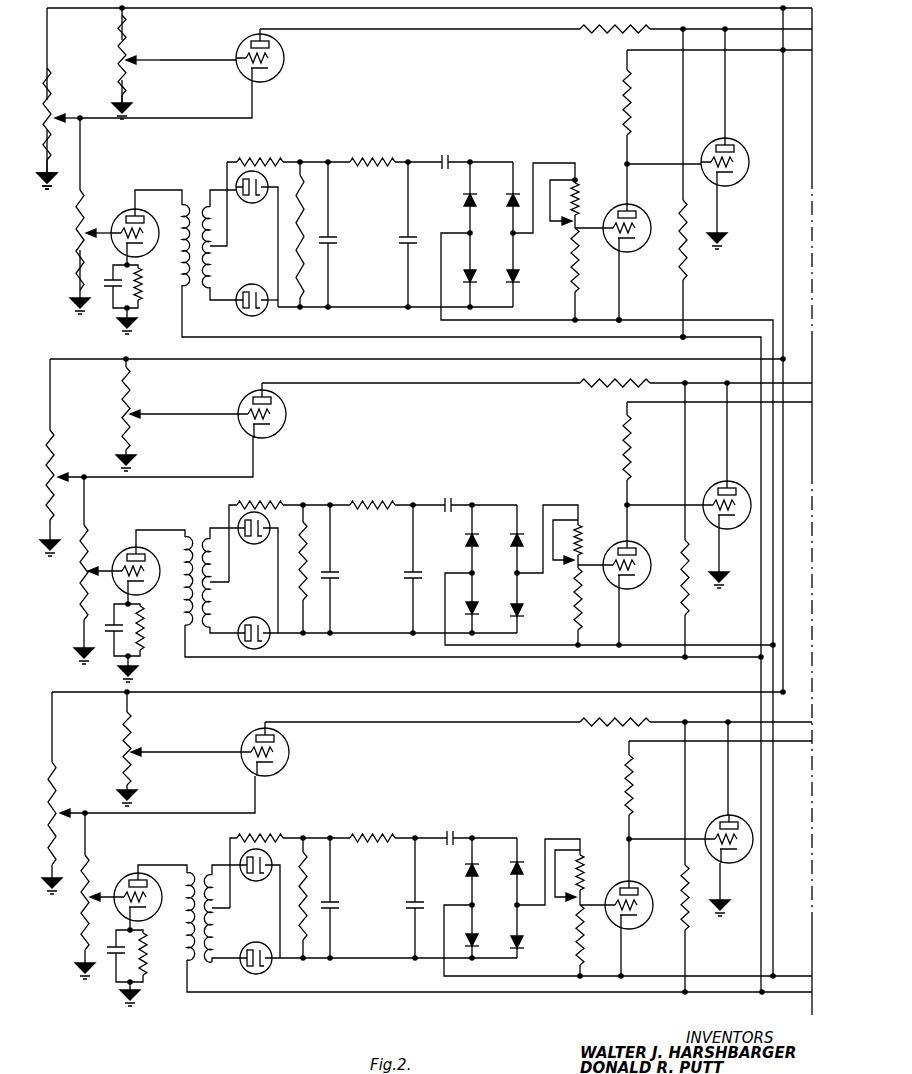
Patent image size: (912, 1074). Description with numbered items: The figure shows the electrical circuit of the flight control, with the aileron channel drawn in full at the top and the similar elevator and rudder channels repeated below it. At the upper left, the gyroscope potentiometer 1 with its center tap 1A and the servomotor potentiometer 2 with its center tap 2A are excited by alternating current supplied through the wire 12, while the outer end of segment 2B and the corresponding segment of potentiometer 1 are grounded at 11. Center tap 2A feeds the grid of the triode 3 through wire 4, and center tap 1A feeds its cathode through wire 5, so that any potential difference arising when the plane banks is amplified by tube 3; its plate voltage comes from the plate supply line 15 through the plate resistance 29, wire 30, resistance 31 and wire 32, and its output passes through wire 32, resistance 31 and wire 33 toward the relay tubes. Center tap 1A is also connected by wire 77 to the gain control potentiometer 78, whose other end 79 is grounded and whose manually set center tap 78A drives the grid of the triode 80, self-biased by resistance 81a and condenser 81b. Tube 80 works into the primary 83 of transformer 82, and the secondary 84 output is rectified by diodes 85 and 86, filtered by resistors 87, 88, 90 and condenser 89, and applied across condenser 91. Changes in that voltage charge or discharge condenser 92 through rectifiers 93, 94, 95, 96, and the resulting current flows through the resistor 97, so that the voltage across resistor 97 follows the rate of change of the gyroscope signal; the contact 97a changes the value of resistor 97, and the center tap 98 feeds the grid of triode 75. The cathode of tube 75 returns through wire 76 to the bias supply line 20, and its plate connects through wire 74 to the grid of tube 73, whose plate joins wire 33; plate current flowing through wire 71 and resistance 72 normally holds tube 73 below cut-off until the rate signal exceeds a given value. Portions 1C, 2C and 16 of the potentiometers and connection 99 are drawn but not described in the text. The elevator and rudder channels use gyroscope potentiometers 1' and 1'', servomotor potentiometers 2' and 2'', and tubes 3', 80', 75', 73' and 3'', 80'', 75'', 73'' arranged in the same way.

The gyroscope potentiometer 1 is at (37, 128).
The center tap 1A is at (60, 116).
The potentiometer upper portion 1C is at (55, 80).
The potentiometer lower portion 16 is at (48, 162).
The servomotor potentiometer 2 is at (136, 55).
The center tap 2A is at (136, 58).
The segment 2B is at (135, 100).
The potentiometer upper portion 2C is at (143, 25).
The triode 3 is at (279, 55).
The wire 4 is at (222, 62).
The wire 5 is at (226, 118).
The ground 11 is at (46, 190).
The wire 12 is at (48, 52).
The plate supply line 15 is at (190, 331).
The negative or C bias supply line 20 is at (441, 322).
The plate resistance 29 is at (690, 268).
The wire 30 is at (686, 124).
The resistance 31 is at (590, 34).
The wire 32 is at (462, 32).
The wire 33 is at (757, 28).
The wire 71 is at (780, 52).
The resistance 72 is at (622, 96).
The tube 73 is at (732, 139).
The wire 74 is at (645, 168).
The triode 75 is at (627, 208).
The wire 76 is at (625, 291).
The wire 77 is at (82, 152).
The gain control potentiometer 78 is at (77, 225).
The center tap 78A is at (112, 207).
The other end of potentiometer 79 is at (78, 281).
The triode 80 is at (140, 225).
The resistance 81a is at (141, 301).
The condenser 81b is at (110, 302).
The transformer 82 is at (196, 186).
The primary 83 is at (141, 268).
The secondary 84 is at (228, 250).
The diode 85 is at (252, 206).
The diode 86 is at (263, 278).
The resistor 87 is at (262, 160).
The resistor 88 is at (305, 213).
The condenser 89 is at (334, 241).
The resistor 90 is at (372, 152).
The condenser 91 is at (414, 241).
The condenser 92 is at (445, 153).
The rectifier 93 is at (462, 200).
The rectifier 94 is at (508, 208).
The rectifier 95 is at (492, 262).
The rectifier 96 is at (520, 278).
The resistor 97 is at (580, 182).
The contact 97a is at (555, 232).
The center tap 98 is at (580, 270).
The conductor 99 is at (543, 162).
The gyroscope potentiometer 1' is at (62, 457).
The servomotor potentiometer 2' is at (177, 415).
The tube 3' is at (281, 410).
The tube 73' is at (722, 488).
The tube 75' is at (627, 575).
The tube 80' is at (139, 552).
The gyroscope potentiometer 1'' is at (67, 793).
The servomotor potentiometer 2'' is at (179, 749).
The tube 3'' is at (286, 749).
The tube 73'' is at (723, 825).
The tube 75'' is at (627, 907).
The tube 80'' is at (140, 879).